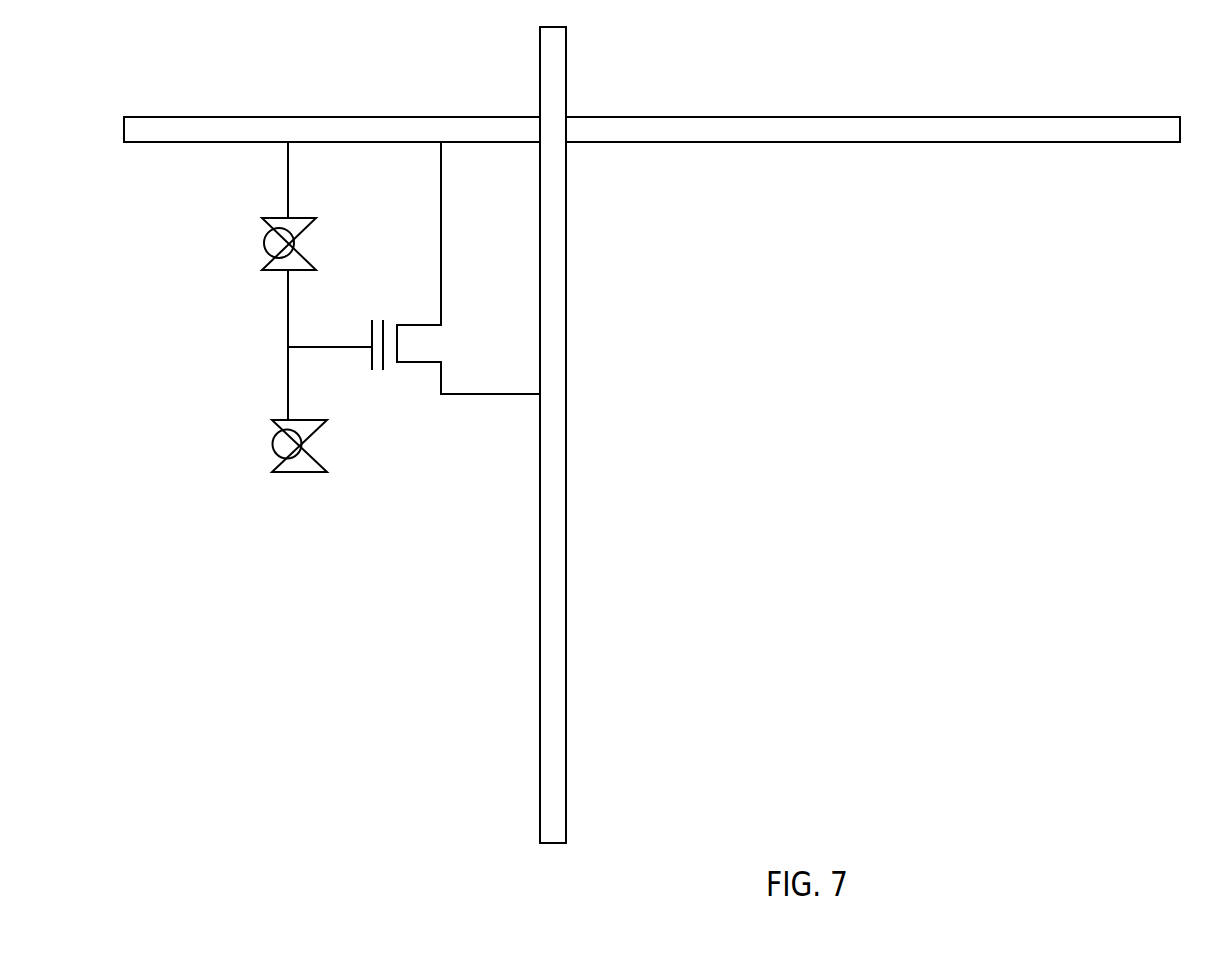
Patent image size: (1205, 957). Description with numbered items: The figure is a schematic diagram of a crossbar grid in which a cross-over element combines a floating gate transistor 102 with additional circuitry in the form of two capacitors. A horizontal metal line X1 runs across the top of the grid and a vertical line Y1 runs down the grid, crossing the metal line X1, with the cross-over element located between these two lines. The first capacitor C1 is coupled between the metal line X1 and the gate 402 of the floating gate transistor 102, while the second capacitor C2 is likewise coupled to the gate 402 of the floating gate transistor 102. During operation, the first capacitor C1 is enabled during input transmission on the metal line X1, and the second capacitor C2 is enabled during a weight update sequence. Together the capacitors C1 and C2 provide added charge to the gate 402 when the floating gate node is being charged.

The metal line X1 is at (166, 117).
The second electrode line (column line) Y1 is at (566, 802).
The capacitor C1 is at (260, 244).
The capacitor C2 is at (260, 409).
The gate 402 is at (318, 347).
The floating gate transistor 102 is at (420, 363).